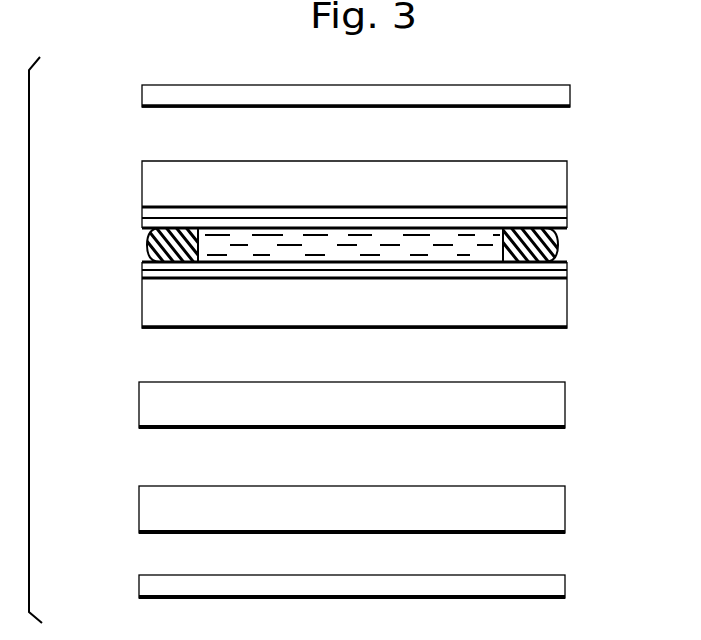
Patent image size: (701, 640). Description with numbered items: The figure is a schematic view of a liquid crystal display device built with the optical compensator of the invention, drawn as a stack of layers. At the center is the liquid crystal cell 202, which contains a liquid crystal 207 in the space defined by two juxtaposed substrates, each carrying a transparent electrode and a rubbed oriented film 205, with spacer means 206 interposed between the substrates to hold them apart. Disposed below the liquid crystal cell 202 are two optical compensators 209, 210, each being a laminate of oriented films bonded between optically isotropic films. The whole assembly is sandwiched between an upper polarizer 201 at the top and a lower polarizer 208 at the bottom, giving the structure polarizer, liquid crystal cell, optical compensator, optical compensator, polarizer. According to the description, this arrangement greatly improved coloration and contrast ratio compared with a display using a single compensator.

The upper polarizer 201 is at (563, 90).
The liquid crystal cell 202 is at (558, 181).
The oriented film 205 is at (142, 232).
The spacer 206 is at (558, 238).
The liquid crystal 207 is at (470, 252).
The lower polarizer 208 is at (553, 585).
The optical compensator 209 is at (553, 405).
The optical compensator 210 is at (553, 505).